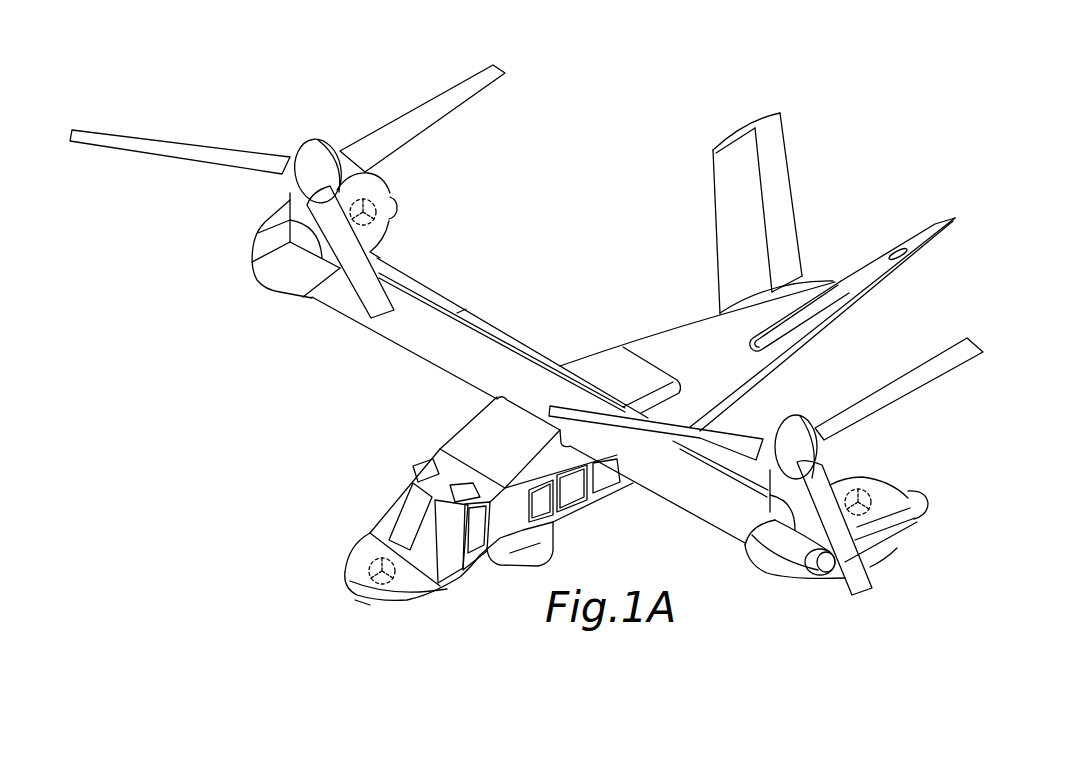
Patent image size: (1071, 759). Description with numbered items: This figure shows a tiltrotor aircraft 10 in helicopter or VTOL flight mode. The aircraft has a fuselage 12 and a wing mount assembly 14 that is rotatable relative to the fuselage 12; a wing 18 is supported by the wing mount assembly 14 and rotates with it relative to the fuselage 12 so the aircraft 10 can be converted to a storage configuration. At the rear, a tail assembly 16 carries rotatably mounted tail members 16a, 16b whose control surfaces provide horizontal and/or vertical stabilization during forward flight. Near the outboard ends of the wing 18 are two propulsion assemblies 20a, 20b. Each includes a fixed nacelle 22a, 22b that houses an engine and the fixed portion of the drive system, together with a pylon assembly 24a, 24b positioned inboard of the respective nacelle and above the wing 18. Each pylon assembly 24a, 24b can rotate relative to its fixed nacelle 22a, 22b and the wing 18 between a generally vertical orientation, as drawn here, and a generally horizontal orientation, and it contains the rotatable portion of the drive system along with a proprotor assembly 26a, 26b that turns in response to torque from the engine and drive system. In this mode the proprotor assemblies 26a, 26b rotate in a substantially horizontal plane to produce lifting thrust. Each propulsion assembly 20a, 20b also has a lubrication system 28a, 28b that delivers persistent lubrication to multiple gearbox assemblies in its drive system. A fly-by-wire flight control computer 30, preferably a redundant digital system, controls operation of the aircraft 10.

The tiltrotor aircraft 10 is at (566, 231).
The fuselage 12 is at (673, 337).
The wing mount assembly 14 is at (600, 367).
The tail assembly 16 is at (788, 177).
The tail member 16a is at (853, 277).
The tail member 16b is at (740, 150).
The wing 18 is at (473, 340).
The propulsion assembly 20a is at (883, 481).
The propulsion assembly 20b is at (395, 226).
The fixed nacelle 22a is at (885, 533).
The fixed nacelle 22b is at (350, 187).
The pylon assembly 24a is at (778, 490).
The pylon assembly 24b is at (290, 203).
The proprotor assembly 26a is at (903, 380).
The proprotor assembly 26b is at (437, 108).
The lubrication system 28a is at (863, 477).
The lubrication system 28b is at (383, 180).
The flight control computer 30 is at (370, 552).